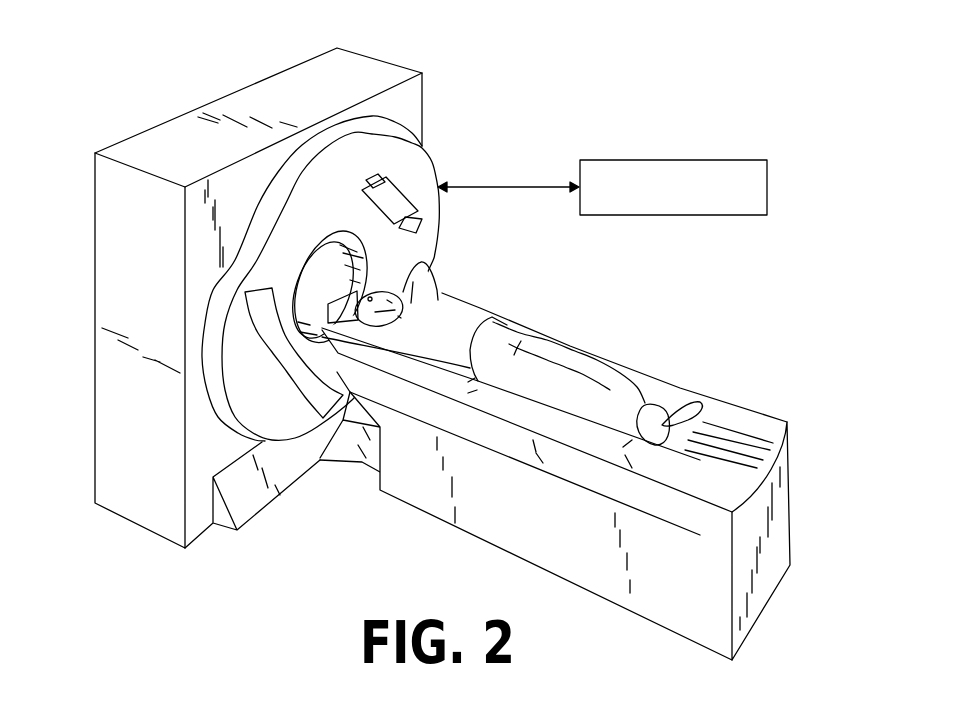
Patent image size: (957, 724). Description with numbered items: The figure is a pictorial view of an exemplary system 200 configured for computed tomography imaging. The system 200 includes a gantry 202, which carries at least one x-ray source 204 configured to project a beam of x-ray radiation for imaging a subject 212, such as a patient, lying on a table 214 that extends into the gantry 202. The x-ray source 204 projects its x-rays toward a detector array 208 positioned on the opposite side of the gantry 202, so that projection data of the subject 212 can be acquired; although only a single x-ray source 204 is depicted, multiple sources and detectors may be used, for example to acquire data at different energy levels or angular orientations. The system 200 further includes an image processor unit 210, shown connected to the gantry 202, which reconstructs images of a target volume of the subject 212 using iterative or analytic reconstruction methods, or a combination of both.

The system 200 is at (707, 36).
The gantry 202 is at (366, 69).
The x-ray source 204 is at (408, 205).
The detector array 208 is at (308, 397).
The image processor unit 210 is at (724, 161).
The subject 212 is at (452, 313).
The table 214 is at (742, 421).